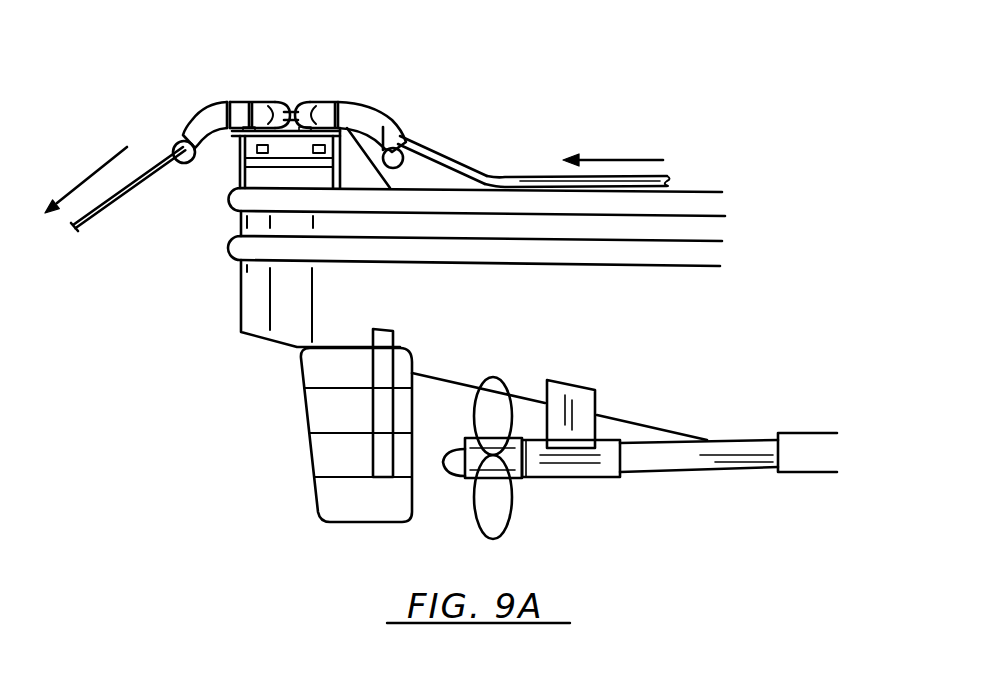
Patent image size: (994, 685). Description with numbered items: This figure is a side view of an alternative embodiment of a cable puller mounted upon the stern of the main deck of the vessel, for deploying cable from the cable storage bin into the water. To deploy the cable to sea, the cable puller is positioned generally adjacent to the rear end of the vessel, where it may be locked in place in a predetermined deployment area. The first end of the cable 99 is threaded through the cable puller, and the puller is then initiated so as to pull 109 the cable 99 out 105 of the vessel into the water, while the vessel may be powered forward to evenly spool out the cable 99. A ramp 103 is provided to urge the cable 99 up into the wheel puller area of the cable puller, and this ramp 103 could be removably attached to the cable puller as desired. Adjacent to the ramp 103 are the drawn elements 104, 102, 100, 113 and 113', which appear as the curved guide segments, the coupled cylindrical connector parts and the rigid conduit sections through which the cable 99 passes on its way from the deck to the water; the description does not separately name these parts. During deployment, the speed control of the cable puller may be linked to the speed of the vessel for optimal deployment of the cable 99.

The cable 99 is at (494, 174).
The connector half 100 is at (311, 100).
The connector half 102 is at (236, 100).
The ramp 103 is at (373, 107).
The curved guide segment 104 is at (201, 108).
The out direction 105 is at (86, 178).
The pull direction 109 is at (658, 156).
The rigid conduit section 113 is at (450, 133).
The rigid conduit section 113' is at (133, 207).